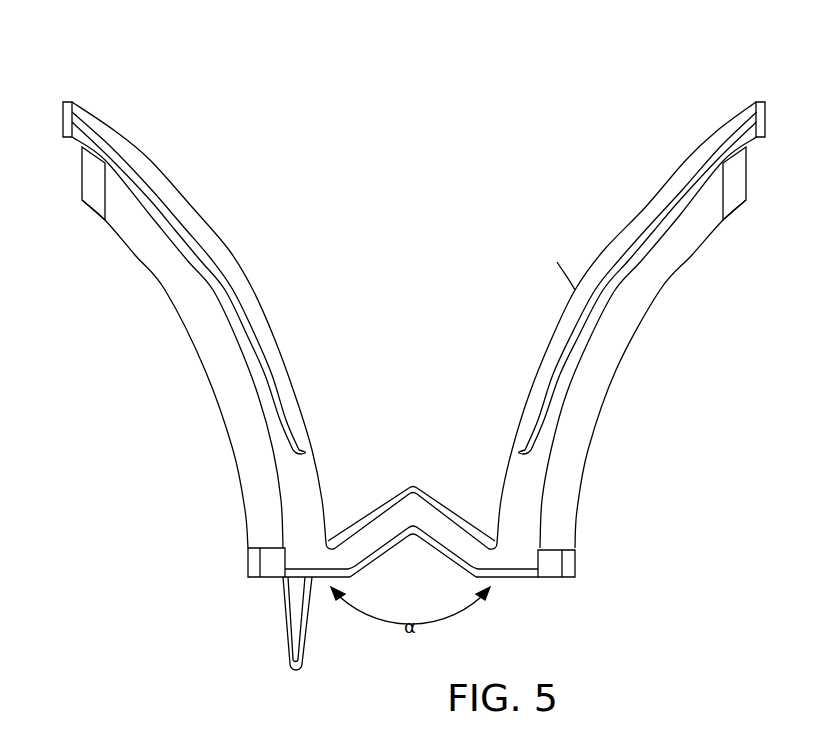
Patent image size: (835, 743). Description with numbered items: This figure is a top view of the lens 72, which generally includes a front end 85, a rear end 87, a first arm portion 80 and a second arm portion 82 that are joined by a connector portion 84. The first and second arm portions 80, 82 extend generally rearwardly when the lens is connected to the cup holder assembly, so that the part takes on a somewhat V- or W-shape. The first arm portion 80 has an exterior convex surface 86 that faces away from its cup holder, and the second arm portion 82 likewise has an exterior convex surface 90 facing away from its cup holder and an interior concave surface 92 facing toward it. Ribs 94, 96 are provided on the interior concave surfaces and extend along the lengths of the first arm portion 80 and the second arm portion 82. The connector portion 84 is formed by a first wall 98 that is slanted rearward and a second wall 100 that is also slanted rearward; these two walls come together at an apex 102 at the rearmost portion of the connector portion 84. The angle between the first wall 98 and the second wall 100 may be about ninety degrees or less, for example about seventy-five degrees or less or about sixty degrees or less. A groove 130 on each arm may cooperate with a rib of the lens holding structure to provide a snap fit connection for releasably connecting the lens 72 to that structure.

The lens 72 is at (631, 300).
The first arm portion 80 is at (193, 209).
The second arm portion 82 is at (663, 187).
The connector portion 84 is at (480, 557).
The front end 85 is at (381, 633).
The exterior convex surface 86 is at (237, 254).
The rear end 87 is at (410, 289).
The exterior convex surface 90 is at (573, 290).
The interior concave surface 92 is at (617, 287).
The rib 94 is at (209, 362).
The rib 96 is at (598, 395).
The first wall 98 is at (377, 510).
The second wall 100 is at (450, 517).
The apex 102 is at (413, 530).
The groove 130 is at (138, 167).